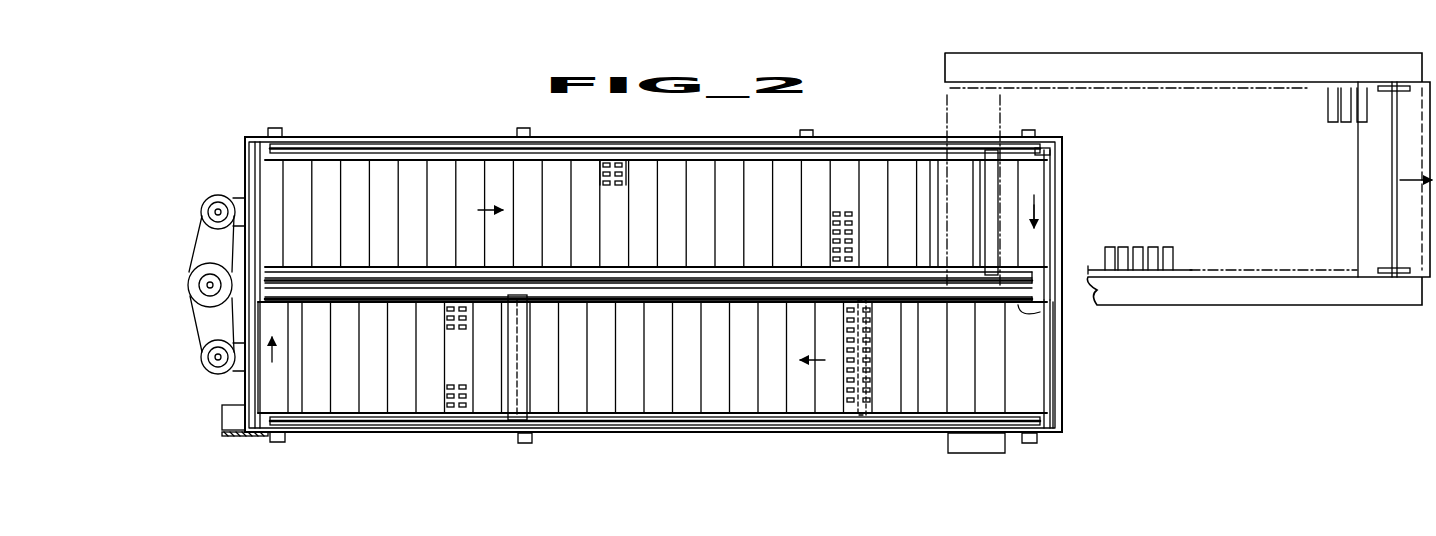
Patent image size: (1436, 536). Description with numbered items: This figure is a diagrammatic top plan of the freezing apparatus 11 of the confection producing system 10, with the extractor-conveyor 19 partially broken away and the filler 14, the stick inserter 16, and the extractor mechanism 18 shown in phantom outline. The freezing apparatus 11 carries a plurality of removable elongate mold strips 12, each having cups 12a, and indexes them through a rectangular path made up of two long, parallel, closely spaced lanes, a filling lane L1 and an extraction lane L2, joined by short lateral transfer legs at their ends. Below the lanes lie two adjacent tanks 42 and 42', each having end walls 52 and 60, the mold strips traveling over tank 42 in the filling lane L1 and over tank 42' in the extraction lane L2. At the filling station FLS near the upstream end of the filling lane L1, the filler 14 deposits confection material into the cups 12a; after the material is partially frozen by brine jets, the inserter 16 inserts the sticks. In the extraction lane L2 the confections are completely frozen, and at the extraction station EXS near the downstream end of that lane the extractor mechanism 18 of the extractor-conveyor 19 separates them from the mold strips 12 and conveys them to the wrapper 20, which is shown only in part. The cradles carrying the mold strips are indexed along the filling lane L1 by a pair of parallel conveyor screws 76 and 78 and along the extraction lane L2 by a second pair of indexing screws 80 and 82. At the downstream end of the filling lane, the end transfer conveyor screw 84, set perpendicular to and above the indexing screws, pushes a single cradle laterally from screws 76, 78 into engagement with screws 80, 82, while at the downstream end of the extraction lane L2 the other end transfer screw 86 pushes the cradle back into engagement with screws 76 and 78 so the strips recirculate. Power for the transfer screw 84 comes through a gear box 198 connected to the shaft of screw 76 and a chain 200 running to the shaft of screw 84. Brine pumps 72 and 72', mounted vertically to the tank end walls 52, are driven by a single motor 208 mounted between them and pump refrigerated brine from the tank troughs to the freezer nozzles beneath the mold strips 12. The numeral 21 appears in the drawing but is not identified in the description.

The system 10 is at (485, 118).
The freezing apparatus 11 is at (550, 137).
The mold strips 12 is at (470, 165).
The cups 12a is at (620, 168).
The filler 14 is at (862, 430).
The inserter 16 is at (532, 428).
The extractor mechanism 18 is at (985, 170).
The extractor-conveyor 19 is at (1295, 52).
The wrapper 20 is at (1358, 168).
The exit reference line 21 is at (915, 158).
The tank 42 is at (652, 396).
The tank 42' is at (656, 180).
The end wall 52 is at (245, 172).
The end wall 60 is at (1064, 392).
The pump 72 is at (187, 336).
The pump 72' is at (187, 233).
The conveyor screw 76 is at (628, 425).
The conveyor screw 78 is at (1050, 308).
The indexing screw 80 is at (1035, 268).
The indexing screw 82 is at (590, 155).
The end transfer conveyor screw 84 is at (255, 392).
The end transfer conveyor screw 86 is at (1050, 152).
The gear box 198 is at (222, 416).
The chain 200 is at (228, 436).
The motor 208 is at (188, 288).
The extraction station EXS is at (1000, 150).
The filling station FLS is at (862, 432).
The filling lane L1 is at (1052, 362).
The extraction lane L2 is at (1050, 185).